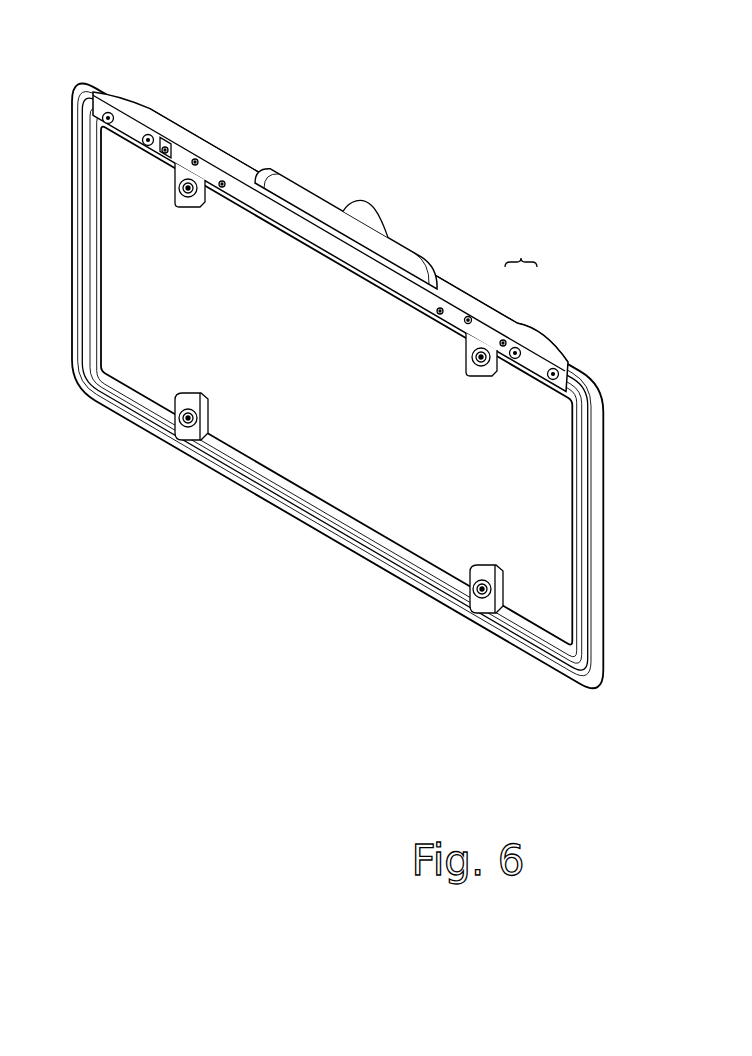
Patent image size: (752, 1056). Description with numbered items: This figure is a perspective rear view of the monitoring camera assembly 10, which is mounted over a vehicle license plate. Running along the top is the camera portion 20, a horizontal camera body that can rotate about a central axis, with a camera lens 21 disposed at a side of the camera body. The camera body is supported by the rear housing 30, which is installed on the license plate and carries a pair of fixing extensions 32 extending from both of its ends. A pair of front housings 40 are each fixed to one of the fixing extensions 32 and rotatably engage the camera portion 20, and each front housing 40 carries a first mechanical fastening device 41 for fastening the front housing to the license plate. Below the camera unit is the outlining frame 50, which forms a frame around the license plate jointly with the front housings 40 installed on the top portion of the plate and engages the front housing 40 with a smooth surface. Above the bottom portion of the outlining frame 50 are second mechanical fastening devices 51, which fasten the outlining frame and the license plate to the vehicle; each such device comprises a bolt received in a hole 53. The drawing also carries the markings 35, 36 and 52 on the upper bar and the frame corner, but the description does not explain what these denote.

The monitoring camera assembly 10 is at (343, 233).
The camera portion 20 is at (346, 228).
The camera lens 21 is at (378, 224).
The rear housing 30 is at (333, 250).
The fixing extension 32 is at (175, 150).
The coupling portion 35 is at (521, 251).
The coupling screw 36 is at (472, 319).
The front housing 40 is at (231, 160).
The first mechanical fastening device 41 is at (203, 208).
The outlining frame 50 is at (607, 606).
The second mechanical fastening device 51 is at (135, 108).
The bracket end portion 52 is at (560, 360).
The hole 53 is at (206, 396).